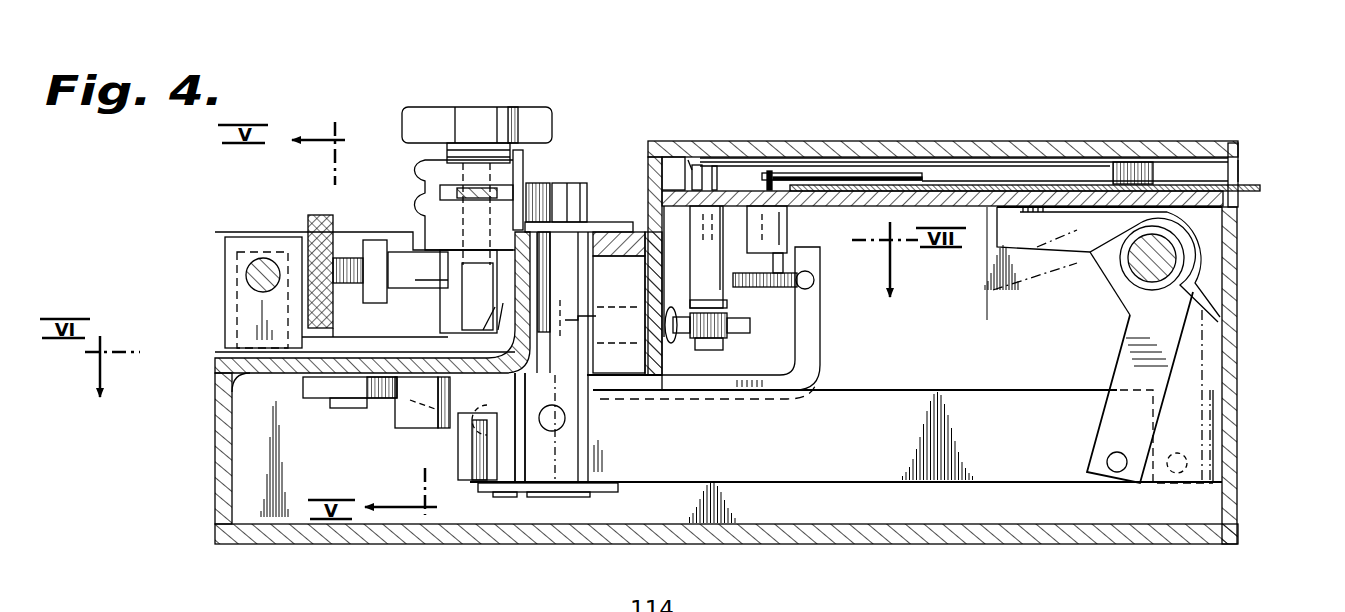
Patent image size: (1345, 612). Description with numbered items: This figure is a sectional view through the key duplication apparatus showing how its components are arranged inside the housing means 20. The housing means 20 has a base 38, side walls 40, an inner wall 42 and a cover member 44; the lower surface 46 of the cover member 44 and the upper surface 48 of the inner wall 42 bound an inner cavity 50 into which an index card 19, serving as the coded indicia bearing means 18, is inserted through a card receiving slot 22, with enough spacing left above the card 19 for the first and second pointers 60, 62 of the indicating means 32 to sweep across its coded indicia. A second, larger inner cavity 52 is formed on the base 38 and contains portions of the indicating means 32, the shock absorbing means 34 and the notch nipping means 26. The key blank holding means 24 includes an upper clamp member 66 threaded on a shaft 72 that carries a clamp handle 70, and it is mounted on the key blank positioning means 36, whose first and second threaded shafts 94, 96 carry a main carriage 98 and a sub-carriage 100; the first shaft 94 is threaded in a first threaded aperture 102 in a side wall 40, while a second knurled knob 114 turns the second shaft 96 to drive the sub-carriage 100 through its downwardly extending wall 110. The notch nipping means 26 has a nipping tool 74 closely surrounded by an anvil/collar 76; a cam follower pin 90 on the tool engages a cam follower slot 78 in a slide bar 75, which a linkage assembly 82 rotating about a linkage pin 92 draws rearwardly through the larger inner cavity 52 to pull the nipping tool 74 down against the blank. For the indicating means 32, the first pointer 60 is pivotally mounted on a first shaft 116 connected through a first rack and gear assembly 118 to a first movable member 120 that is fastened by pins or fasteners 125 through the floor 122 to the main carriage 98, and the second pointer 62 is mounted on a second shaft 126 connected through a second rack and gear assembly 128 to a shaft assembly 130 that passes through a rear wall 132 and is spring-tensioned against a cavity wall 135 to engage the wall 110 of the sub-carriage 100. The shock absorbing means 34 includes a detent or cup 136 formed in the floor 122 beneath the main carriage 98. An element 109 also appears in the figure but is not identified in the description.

The coded indicia bearing means 18 is at (1092, 181).
The index card 19 is at (1160, 184).
The housing means 20 is at (702, 340).
The card receiving slot 22 is at (1228, 172).
The key blank holding means 24 is at (463, 271).
The notch nipping means 26 is at (868, 488).
The indicating means 32 is at (690, 166).
The shock absorbing means 34 is at (440, 432).
The key blank positioning means 36 is at (318, 285).
The base 38 is at (1175, 526).
The side walls 40 is at (215, 450).
The inner wall 42 is at (1198, 210).
The cover member 44 is at (866, 142).
The lower surface 46 is at (1000, 165).
The upper surface 48 is at (946, 188).
The inner cavity 50 is at (1044, 168).
The larger inner cavity 52 is at (976, 365).
The first pointer 60 is at (810, 173).
The second pointer 62 is at (742, 162).
The upper clamp member 66 is at (425, 170).
The clamp handle 70 is at (467, 118).
The shaft 72 is at (508, 175).
The nipping tool 74 is at (592, 280).
The slide bar 75 is at (1022, 452).
The anvil/collar 76 is at (613, 222).
The cam follower slot 78 is at (540, 435).
The linkage assembly 82 is at (1120, 308).
The cam follower pin 90 is at (567, 423).
The linkage pin 92 is at (1152, 283).
The first threaded shaft 94 is at (248, 275).
The second threaded shaft 96 is at (425, 282).
The main carriage 98 is at (226, 325).
The sub-carriage 100 is at (410, 245).
The first threaded aperture 102 is at (355, 599).
The spring 109 is at (367, 255).
The downwardly extending wall 110 is at (498, 330).
The second knurled knob 114 is at (310, 232).
The first shaft 116 is at (788, 240).
The first rack and gear assembly 118 is at (828, 284).
The first movable member 120 is at (818, 380).
The floor 122 is at (216, 392).
The fasteners 125 is at (355, 405).
The second shaft 126 is at (722, 290).
The second rack and gear assembly 128 is at (752, 332).
The shaft assembly 130 is at (671, 343).
The rear wall 132 is at (602, 324).
The cavity wall 135 is at (708, 404).
The detent or cup 136 is at (405, 430).